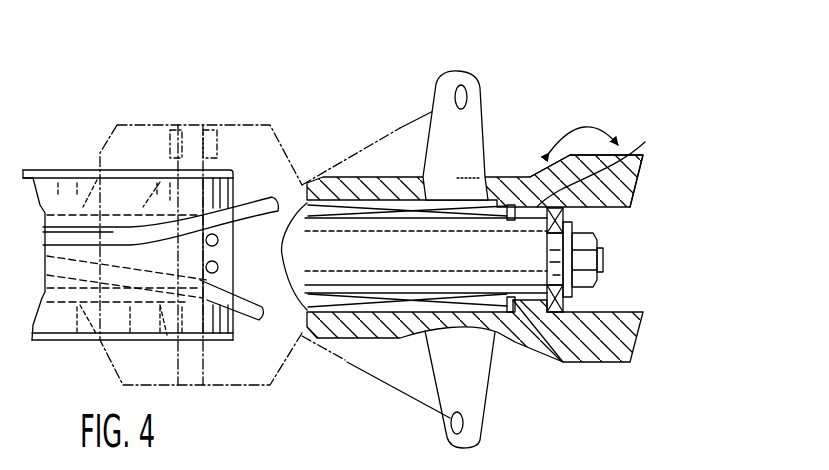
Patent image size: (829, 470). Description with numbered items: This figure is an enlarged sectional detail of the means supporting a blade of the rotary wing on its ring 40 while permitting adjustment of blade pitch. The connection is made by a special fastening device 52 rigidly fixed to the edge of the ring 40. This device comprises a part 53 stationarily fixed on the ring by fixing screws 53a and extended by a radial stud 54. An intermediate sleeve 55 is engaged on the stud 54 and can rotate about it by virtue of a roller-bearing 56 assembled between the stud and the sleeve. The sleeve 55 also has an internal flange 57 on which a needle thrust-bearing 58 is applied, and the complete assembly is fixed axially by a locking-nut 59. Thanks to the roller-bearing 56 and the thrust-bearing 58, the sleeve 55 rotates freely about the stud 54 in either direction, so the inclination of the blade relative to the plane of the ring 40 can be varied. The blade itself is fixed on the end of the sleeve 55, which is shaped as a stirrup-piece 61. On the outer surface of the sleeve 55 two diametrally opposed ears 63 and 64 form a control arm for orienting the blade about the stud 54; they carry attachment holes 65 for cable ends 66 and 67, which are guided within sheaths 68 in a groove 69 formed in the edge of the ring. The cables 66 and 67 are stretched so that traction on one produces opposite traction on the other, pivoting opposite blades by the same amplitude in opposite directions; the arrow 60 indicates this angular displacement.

The ring 40 is at (58, 167).
The fastening device 52 is at (95, 148).
The part 53 is at (230, 124).
The fixing screws 53a is at (177, 128).
The radial stud 54 is at (458, 255).
The intermediate sleeve 55 is at (390, 187).
The roller-bearing 56 is at (495, 193).
The internal flange 57 is at (605, 162).
The needle thrust-bearing 58 is at (567, 215).
The locking-nut 59 is at (595, 258).
The pivot arc 60 is at (583, 123).
The stirrup-piece 61 is at (630, 190).
The ear 63 is at (460, 75).
The ear 64 is at (478, 436).
The attachment holes 65 is at (463, 100).
The cable end 66 is at (373, 143).
The cable end 67 is at (397, 392).
The sheaths 68 is at (263, 197).
The groove 69 is at (133, 212).